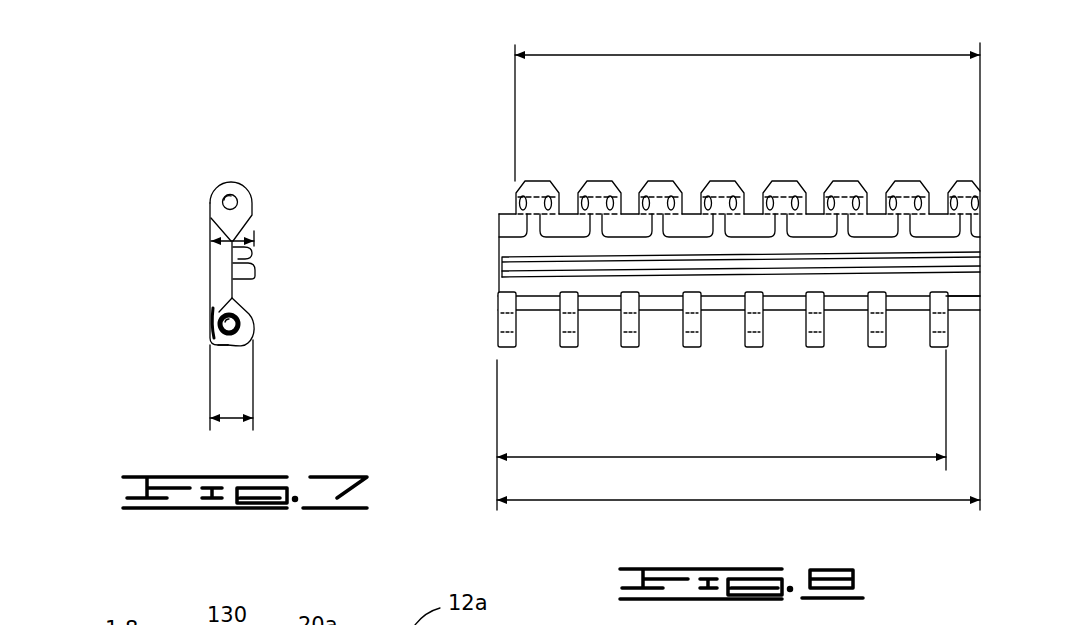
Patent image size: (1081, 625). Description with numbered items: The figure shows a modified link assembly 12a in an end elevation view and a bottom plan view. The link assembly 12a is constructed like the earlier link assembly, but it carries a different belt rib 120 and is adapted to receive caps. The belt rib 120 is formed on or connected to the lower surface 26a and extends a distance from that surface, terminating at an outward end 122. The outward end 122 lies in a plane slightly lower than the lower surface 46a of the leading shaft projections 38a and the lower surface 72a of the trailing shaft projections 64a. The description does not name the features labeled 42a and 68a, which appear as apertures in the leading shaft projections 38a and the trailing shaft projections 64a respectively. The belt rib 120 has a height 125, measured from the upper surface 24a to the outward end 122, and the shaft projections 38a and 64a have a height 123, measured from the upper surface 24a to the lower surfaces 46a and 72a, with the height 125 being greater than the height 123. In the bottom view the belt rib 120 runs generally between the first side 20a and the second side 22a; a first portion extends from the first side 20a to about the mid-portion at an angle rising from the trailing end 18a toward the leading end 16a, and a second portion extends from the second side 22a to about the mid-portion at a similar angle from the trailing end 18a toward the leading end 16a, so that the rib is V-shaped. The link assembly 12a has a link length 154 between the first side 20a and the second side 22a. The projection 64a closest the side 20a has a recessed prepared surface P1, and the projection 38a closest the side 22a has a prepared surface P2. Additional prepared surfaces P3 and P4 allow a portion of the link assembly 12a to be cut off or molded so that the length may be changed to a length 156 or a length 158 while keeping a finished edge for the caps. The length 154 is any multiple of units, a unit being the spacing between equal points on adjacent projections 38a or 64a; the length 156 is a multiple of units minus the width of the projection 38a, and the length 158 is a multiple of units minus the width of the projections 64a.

In FIG. 7, the modified link assembly 12a is at (208, 258).
In FIG. 8, the modified link assembly 12a is at (820, 243).
In FIG. 8, the leading end 16a is at (690, 213).
In FIG. 8, the trailing end 18a is at (723, 312).
In FIG. 8, the first side 20a is at (498, 250).
In FIG. 8, the second side 22a is at (982, 243).
In FIG. 7, the upper surface 24a is at (208, 292).
In FIG. 7, the lower surface 26a is at (233, 290).
In FIG. 8, the lower surface 26a is at (930, 232).
In FIG. 7, the leading shaft projections 38a is at (223, 190).
In FIG. 8, the leading shaft projections 38a is at (600, 181).
In FIG. 7, the eyelet aperture 42a is at (236, 206).
In FIG. 8, the eyelet aperture 42a is at (662, 200).
In FIG. 7, the lower surface of leading shaft projection 46a is at (237, 206).
In FIG. 7, the trailing shaft projections 64a is at (227, 347).
In FIG. 8, the trailing shaft projections 64a is at (840, 347).
In FIG. 7, the loop side wall 68a is at (238, 345).
In FIG. 8, the loop side wall 68a is at (883, 328).
In FIG. 7, the lower surface of trailing shaft projection 72a is at (253, 327).
In FIG. 7, the belt rib 120 is at (253, 256).
In FIG. 8, the belt rib 120 is at (752, 252).
In FIG. 7, the outward end 122 is at (252, 268).
In FIG. 8, the outward end 122 is at (632, 263).
In FIG. 7, the height of shaft projections 123 is at (228, 420).
In FIG. 7, the height of belt rib 125 is at (243, 236).
In FIG. 8, the length 154 is at (835, 500).
In FIG. 8, the length 156 is at (693, 458).
In FIG. 8, the length 158 is at (745, 55).
In FIG. 8, the prepared surface P1 is at (497, 322).
In FIG. 8, the prepared surface P2 is at (981, 198).
In FIG. 8, the prepared surface P3 is at (943, 320).
In FIG. 8, the prepared surface P4 is at (519, 204).